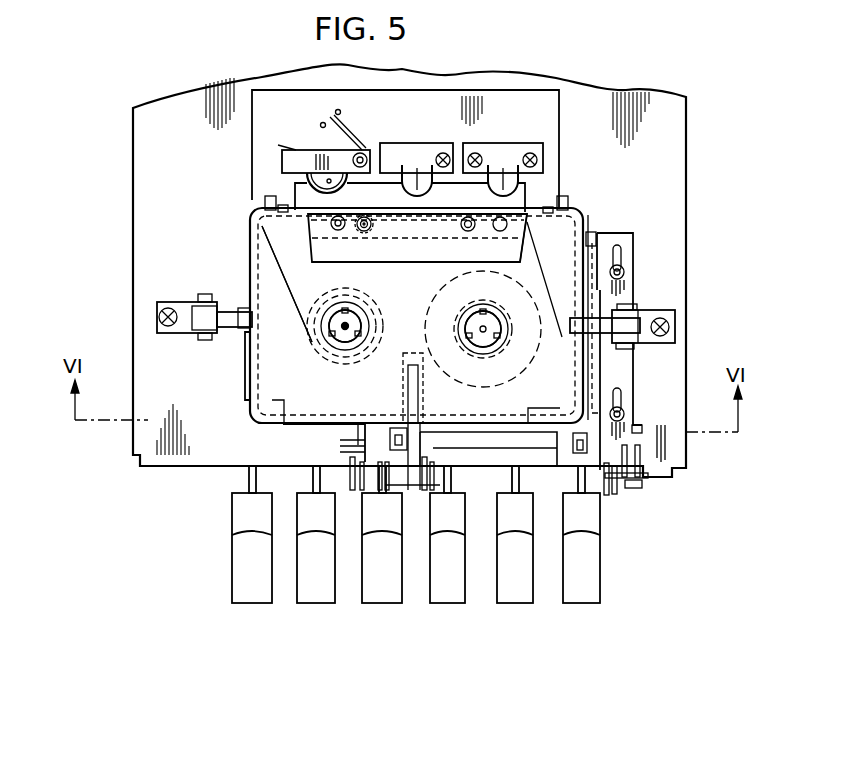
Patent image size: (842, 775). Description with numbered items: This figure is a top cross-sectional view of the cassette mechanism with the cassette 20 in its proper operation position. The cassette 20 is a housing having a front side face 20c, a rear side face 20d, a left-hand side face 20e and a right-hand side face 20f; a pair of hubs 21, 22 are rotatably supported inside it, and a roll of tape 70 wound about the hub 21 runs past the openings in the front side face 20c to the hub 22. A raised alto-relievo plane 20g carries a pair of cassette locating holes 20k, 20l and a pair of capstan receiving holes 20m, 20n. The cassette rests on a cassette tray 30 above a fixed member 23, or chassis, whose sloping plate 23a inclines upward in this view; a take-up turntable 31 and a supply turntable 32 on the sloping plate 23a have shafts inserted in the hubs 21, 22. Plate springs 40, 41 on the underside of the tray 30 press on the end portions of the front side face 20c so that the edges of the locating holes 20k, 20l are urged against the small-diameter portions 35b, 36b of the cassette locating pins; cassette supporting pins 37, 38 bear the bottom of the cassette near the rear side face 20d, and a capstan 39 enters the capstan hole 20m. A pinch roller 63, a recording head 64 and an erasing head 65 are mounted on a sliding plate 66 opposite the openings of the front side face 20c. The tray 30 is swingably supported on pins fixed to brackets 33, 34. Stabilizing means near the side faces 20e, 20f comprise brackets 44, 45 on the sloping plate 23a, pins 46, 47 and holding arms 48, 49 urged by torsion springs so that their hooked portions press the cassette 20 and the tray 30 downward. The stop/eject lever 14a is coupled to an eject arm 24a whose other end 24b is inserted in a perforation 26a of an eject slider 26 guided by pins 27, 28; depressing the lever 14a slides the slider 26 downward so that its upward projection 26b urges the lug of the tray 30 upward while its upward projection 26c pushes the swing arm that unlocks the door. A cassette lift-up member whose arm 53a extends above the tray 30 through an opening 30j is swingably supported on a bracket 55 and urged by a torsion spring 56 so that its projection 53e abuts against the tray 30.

The stop/eject lever 14a is at (583, 604).
The cassette 20 is at (250, 252).
The front side face 20c is at (348, 195).
The rear side face 20d is at (270, 421).
The left-hand side face 20e is at (247, 358).
The right-hand side face 20f is at (593, 370).
The top alto-relievo plane 20g is at (438, 225).
The cassette locating hole 20k is at (372, 232).
The cassette locating hole 20l is at (467, 228).
The capstan receiving hole 20m is at (352, 262).
The capstan receiving hole 20n is at (524, 232).
The hub 21 is at (348, 352).
The hub 22 is at (486, 355).
The fixed member 23 is at (130, 309).
The sloping plate 23a is at (673, 172).
The eject arm 24a is at (582, 487).
The other end of eject arm 24b is at (567, 459).
The eject slider 26 is at (622, 232).
The perforation 26a is at (575, 440).
The upward projection 26b is at (586, 237).
The upward projection 26c is at (642, 430).
The pin 27 is at (624, 270).
The pin 28 is at (625, 411).
The cassette tray 30 is at (363, 440).
The opening 30j is at (423, 434).
The take-up turntable 31 is at (352, 316).
The supply turntable 32 is at (493, 307).
The bracket 33 is at (352, 457).
The bracket 34 is at (645, 483).
The small-diameter portion 35b is at (372, 226).
The small-diameter portion 36b is at (500, 228).
The cassette supporting pin 37 is at (273, 403).
The cassette supporting pin 38 is at (555, 406).
The capstan 39 is at (341, 229).
The plate spring 40 is at (265, 201).
The plate spring 41 is at (564, 205).
The bracket 44 is at (175, 337).
The bracket 45 is at (648, 310).
The pin 46 is at (205, 295).
The pin 47 is at (628, 349).
The holding arm 48 is at (223, 313).
The holding arm 49 is at (572, 333).
The cassette lift-up arm 53a is at (417, 353).
The projection 53e is at (407, 433).
The bracket 55 is at (443, 466).
The torsion spring 56 is at (425, 492).
The pinch roller 63 is at (306, 152).
The recording head 64 is at (419, 165).
The erasing head 65 is at (502, 168).
The sliding plate 66 is at (548, 121).
The roll of tape 70 is at (293, 300).